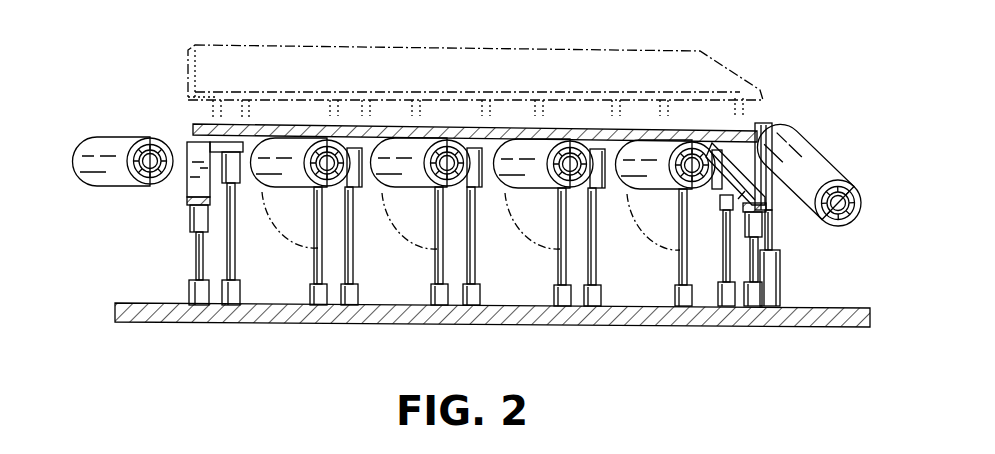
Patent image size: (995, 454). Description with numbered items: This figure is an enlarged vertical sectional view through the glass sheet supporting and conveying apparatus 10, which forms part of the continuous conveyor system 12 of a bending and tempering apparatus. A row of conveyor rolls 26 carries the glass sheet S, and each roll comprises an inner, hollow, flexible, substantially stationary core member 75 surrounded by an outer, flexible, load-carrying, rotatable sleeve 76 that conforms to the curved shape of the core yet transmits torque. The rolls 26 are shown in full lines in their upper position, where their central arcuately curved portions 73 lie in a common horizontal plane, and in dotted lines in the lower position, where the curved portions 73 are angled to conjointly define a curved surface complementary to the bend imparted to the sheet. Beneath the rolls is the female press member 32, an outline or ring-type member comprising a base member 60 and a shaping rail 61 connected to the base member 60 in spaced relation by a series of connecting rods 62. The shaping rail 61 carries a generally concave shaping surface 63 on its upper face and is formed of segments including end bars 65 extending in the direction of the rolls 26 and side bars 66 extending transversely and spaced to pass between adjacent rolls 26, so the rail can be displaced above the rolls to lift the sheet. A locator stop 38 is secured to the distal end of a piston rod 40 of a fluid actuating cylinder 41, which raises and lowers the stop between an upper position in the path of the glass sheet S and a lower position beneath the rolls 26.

The glass sheet supporting and conveying apparatus 10 is at (262, 224).
The conveyor system 12 is at (126, 114).
The conveyor rolls 26 is at (282, 124).
The glass sheet S is at (192, 124).
The female press member 32 is at (118, 263).
The locator stops 38 is at (767, 123).
The piston rod 40 is at (771, 238).
The fluid actuating cylinder 41 is at (782, 283).
The base member 60 is at (200, 320).
The shaping rail 61 is at (721, 207).
The connecting rods 62 is at (229, 252).
The shaping surface 63 is at (740, 170).
The end bars 65 is at (186, 202).
The side bars 66 is at (355, 149).
The central, arcuately curved portion 73 is at (456, 210).
The core member 75 is at (328, 152).
The sleeve 76 is at (316, 147).